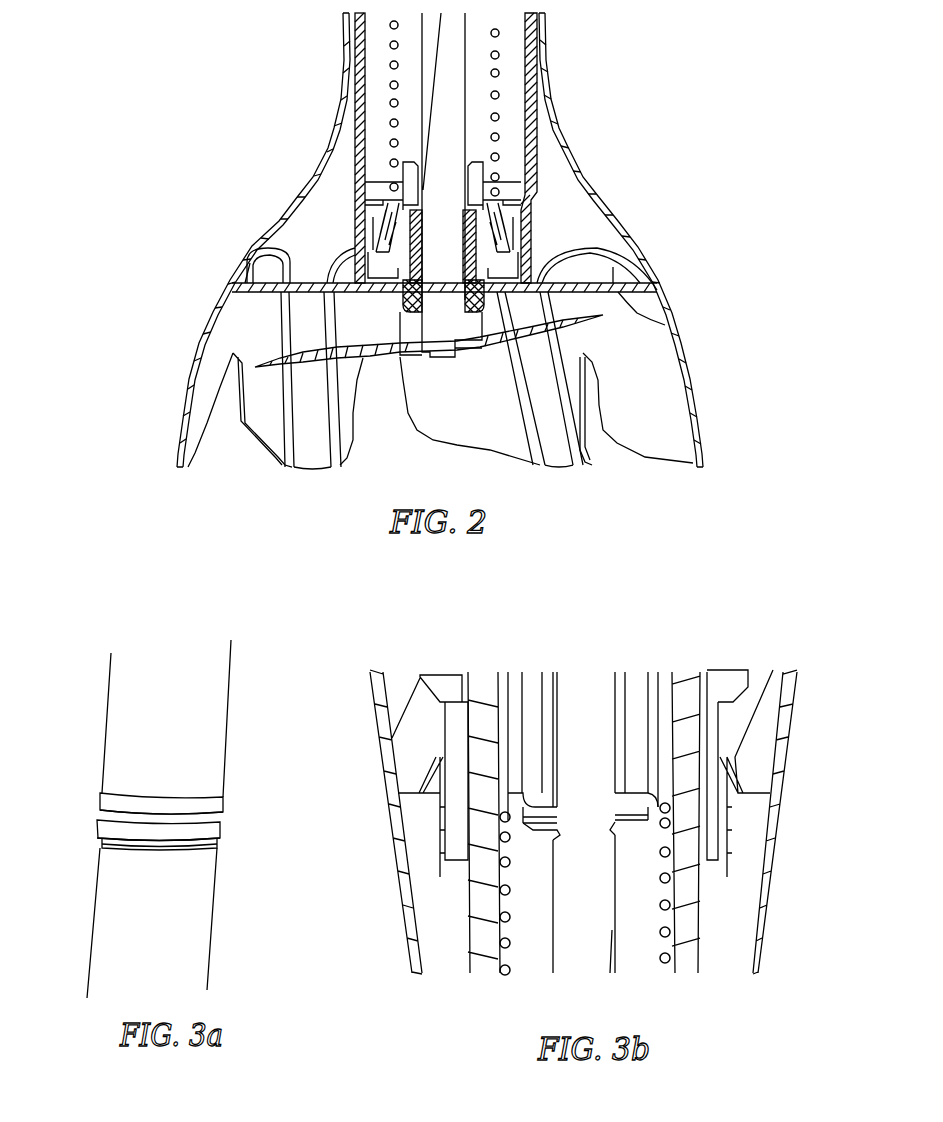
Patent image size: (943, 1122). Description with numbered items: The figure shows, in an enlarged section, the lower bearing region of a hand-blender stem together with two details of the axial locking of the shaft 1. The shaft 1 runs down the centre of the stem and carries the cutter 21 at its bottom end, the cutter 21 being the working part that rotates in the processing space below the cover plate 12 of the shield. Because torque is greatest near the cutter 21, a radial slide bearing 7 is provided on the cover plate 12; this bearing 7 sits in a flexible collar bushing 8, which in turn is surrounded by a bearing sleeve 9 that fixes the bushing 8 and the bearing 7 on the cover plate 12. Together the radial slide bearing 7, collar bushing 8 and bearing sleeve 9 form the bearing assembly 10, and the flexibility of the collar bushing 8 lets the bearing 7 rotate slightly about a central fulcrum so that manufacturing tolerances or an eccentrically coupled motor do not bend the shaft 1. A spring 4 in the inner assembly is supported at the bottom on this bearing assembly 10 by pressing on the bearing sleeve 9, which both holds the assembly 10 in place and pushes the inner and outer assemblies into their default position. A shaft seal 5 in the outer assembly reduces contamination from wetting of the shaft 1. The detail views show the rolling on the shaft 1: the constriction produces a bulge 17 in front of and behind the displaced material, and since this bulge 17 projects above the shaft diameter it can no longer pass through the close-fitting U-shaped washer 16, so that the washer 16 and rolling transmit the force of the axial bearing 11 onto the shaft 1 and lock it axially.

In FIG. 3a, the shaft 1 is at (141, 729).
In FIG. 3b, the shaft 1 is at (583, 740).
In FIG. 2, the spring 4 is at (390, 85).
In FIG. 3b, the spring 4 is at (659, 935).
In FIG. 2, the shaft seal 5 is at (403, 312).
In FIG. 2, the radial slide bearing 7 is at (375, 242).
In FIG. 2, the flexible collar bushing 8 is at (372, 262).
In FIG. 2, the bearing sleeve 9 is at (496, 239).
In FIG. 2, the bearing assembly 10 is at (542, 213).
In FIG. 3b, the axial bearing 11 is at (523, 807).
In FIG. 2, the cover plate 12 is at (665, 325).
In FIG. 3b, the U-shaped washer 16 is at (650, 807).
In FIG. 3a, the bulge 17 is at (101, 821).
In FIG. 3b, the bulge 17 is at (557, 830).
In FIG. 2, the cutter 21 is at (483, 345).